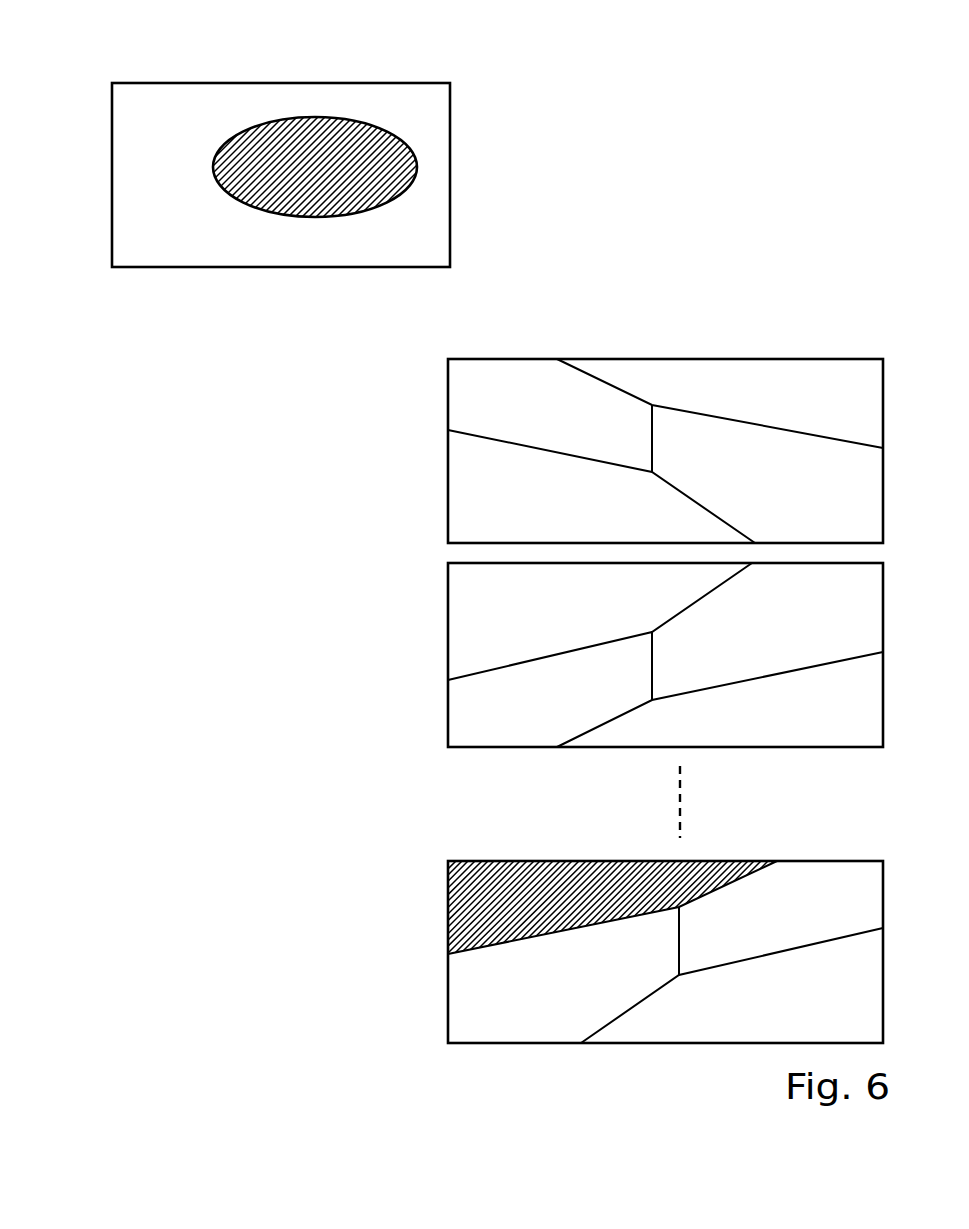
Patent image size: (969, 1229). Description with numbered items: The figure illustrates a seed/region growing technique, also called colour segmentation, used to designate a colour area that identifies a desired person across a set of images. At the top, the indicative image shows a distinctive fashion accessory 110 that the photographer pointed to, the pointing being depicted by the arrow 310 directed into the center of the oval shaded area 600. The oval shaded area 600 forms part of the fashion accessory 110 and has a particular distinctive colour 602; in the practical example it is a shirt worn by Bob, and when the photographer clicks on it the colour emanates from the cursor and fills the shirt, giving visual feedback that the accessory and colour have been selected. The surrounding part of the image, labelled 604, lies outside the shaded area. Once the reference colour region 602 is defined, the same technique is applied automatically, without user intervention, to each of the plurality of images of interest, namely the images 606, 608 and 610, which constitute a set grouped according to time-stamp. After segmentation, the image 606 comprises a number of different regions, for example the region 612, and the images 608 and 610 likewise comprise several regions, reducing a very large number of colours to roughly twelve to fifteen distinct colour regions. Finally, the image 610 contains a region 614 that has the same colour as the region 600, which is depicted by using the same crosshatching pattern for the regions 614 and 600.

The fashion accessory 110 is at (112, 148).
The oval shaded area 600 is at (315, 117).
The arrow 310 is at (364, 153).
The distinctive colour 602 is at (327, 200).
The background area 604 is at (227, 238).
The image 606 is at (600, 408).
The image 608 is at (402, 629).
The image 610 is at (602, 919).
The region 612 is at (653, 382).
The region 614 is at (510, 882).